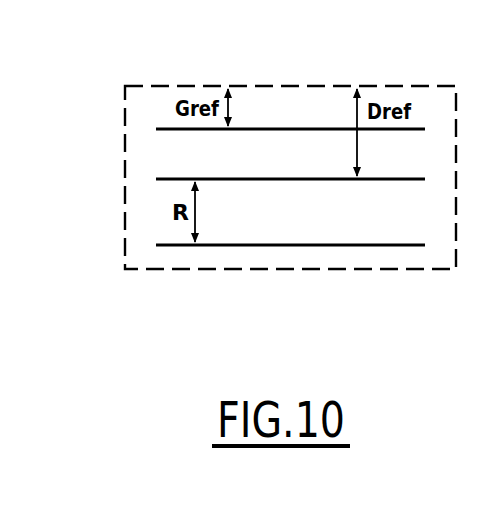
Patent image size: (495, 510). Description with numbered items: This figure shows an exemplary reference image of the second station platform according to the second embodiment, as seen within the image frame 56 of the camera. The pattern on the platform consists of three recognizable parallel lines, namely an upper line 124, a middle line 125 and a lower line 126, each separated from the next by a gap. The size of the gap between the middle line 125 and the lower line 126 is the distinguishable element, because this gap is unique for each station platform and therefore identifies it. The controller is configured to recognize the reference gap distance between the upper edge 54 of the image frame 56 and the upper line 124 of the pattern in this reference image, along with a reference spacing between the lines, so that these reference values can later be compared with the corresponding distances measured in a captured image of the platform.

The upper edge 54 is at (277, 85).
The image frame 56 is at (120, 287).
The upper line 124 is at (157, 129).
The middle line 125 is at (377, 178).
The lower line 126 is at (388, 246).